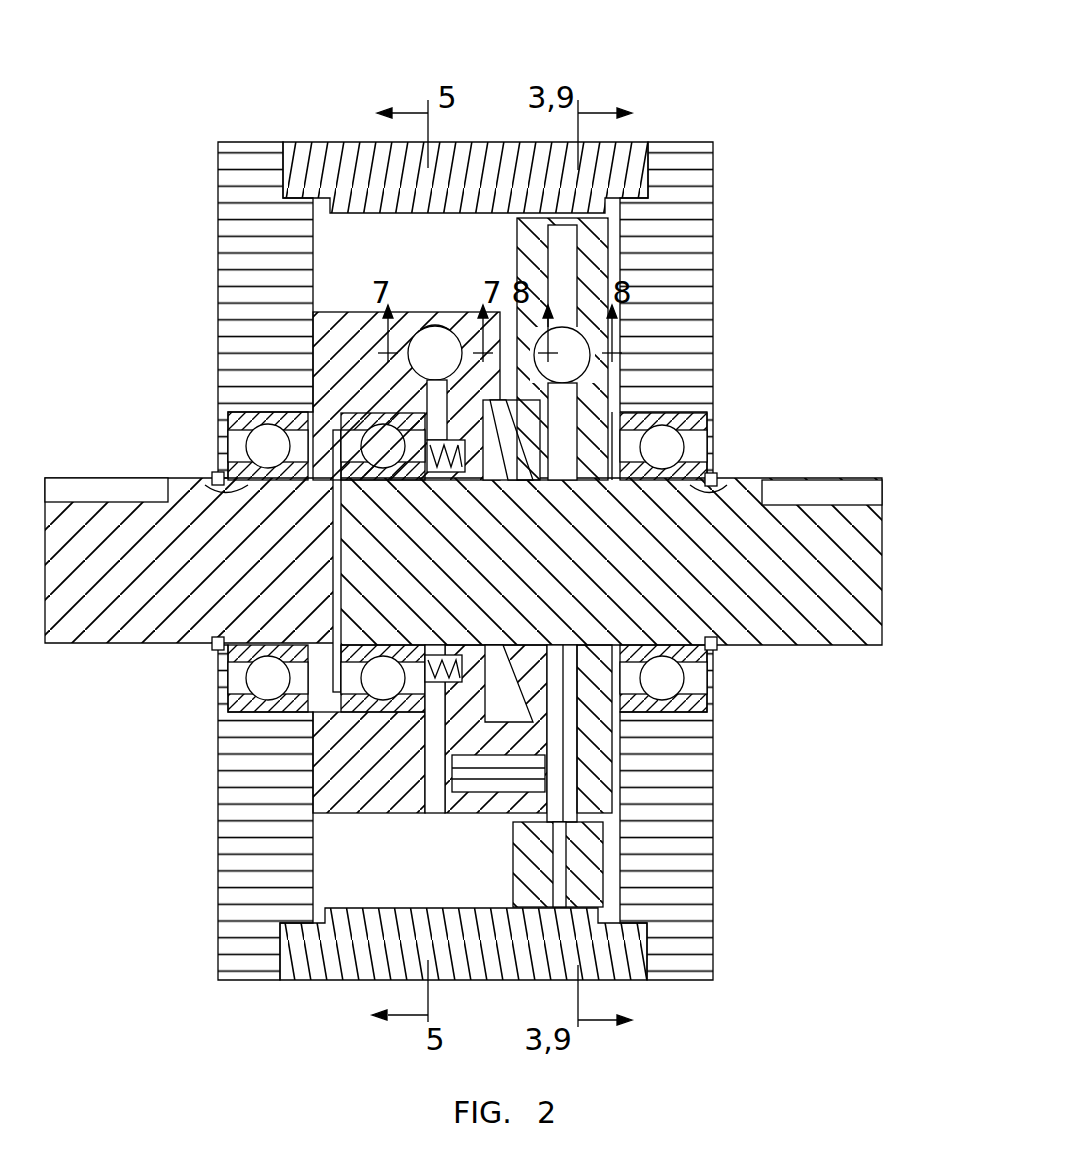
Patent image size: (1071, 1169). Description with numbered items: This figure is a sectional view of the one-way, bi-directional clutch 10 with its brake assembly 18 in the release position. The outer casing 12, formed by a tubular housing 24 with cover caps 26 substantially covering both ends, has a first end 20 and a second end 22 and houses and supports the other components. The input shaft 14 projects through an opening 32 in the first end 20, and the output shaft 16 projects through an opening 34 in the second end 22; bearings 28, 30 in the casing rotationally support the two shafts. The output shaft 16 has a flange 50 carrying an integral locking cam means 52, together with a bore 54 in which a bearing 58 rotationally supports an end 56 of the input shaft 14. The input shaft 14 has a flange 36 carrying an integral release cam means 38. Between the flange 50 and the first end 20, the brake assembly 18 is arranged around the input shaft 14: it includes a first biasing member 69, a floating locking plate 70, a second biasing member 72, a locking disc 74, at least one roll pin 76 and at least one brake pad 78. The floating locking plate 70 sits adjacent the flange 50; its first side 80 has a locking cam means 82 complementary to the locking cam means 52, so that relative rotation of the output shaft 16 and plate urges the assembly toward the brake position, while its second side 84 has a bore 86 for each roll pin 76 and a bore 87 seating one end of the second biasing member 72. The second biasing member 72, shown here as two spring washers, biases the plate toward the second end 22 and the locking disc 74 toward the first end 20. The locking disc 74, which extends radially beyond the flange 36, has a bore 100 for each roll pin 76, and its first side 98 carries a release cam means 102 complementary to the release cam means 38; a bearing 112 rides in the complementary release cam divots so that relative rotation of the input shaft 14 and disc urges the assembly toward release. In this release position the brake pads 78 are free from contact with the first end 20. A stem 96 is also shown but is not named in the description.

The one-way, bi-directional clutch 10 is at (670, 84).
The outer casing 12 is at (310, 110).
The input shaft 14 is at (775, 640).
The output shaft 16 is at (133, 640).
The brake assembly 18 is at (490, 848).
The first end 20 is at (713, 346).
The second end 22 is at (218, 346).
The tubular housing 24 is at (483, 157).
The cover caps 26 is at (218, 185).
The bearing 28 is at (700, 425).
The bearing 30 is at (228, 425).
The opening 32 is at (720, 482).
The opening 34 is at (212, 478).
The flange 36 is at (650, 795).
The release cam means 38 is at (578, 378).
The flange 50 is at (328, 345).
The locking cam means 52 is at (432, 326).
The bore 54 is at (330, 482).
The end 56 is at (335, 522).
The bearing 58 is at (400, 482).
The first biasing member 69 is at (445, 657).
The floating locking plate 70 is at (455, 813).
The second biasing member 72 is at (500, 648).
The locking disc 74 is at (522, 888).
The roll pin 76 is at (495, 795).
The brake pad 78 is at (606, 878).
The first side 80 is at (430, 738).
The locking cam means 82 is at (440, 326).
The second side 84 is at (548, 800).
The bore 86 is at (450, 780).
The bore 87 is at (480, 472).
The ball stem 96 is at (432, 370).
The first side 98 is at (560, 902).
The bore 100 is at (560, 762).
The release cam means 102 is at (552, 325).
The bearing 112 is at (555, 300).